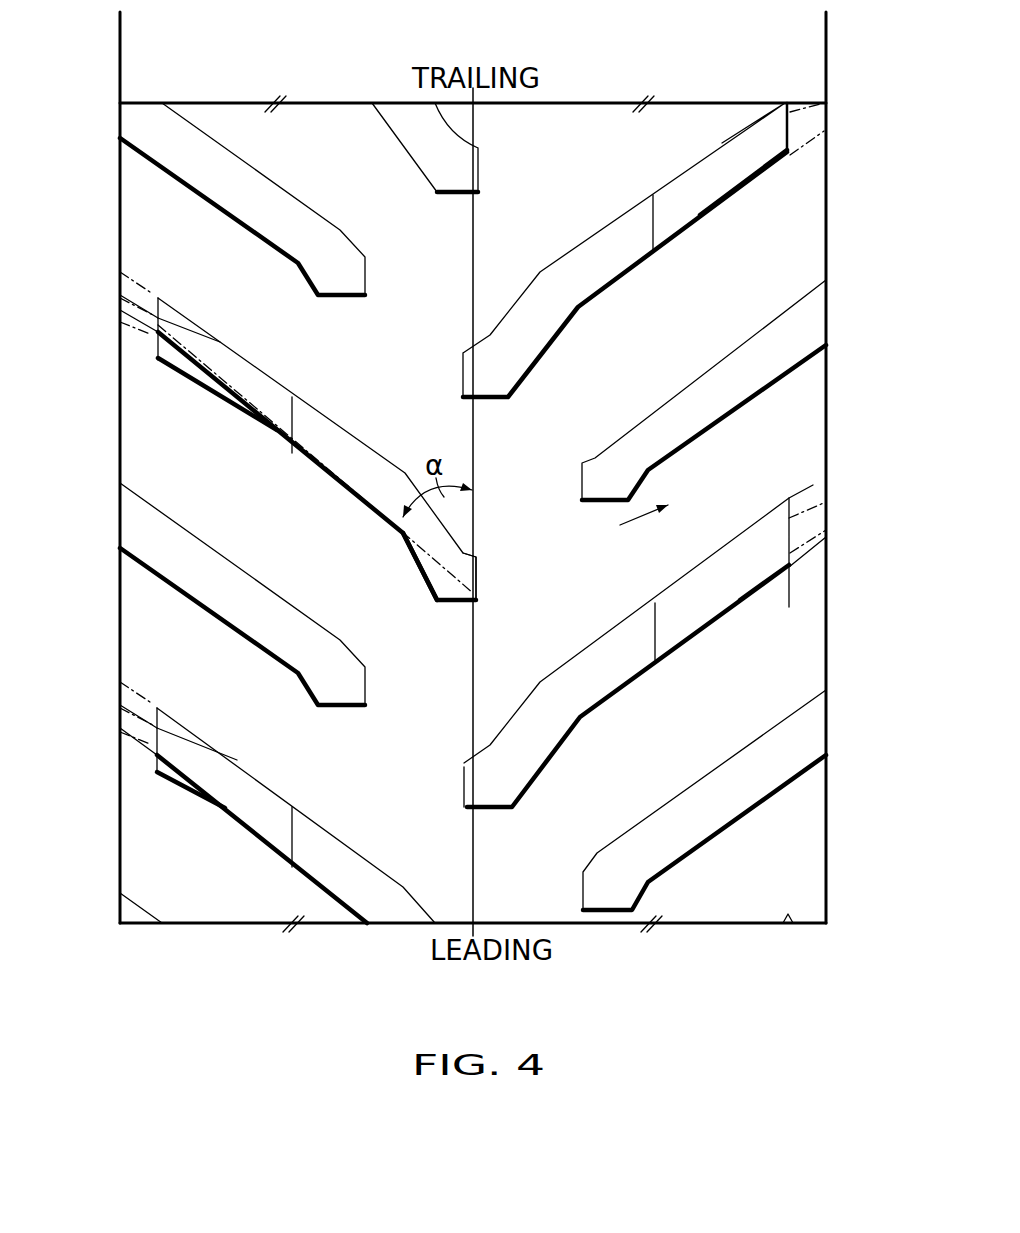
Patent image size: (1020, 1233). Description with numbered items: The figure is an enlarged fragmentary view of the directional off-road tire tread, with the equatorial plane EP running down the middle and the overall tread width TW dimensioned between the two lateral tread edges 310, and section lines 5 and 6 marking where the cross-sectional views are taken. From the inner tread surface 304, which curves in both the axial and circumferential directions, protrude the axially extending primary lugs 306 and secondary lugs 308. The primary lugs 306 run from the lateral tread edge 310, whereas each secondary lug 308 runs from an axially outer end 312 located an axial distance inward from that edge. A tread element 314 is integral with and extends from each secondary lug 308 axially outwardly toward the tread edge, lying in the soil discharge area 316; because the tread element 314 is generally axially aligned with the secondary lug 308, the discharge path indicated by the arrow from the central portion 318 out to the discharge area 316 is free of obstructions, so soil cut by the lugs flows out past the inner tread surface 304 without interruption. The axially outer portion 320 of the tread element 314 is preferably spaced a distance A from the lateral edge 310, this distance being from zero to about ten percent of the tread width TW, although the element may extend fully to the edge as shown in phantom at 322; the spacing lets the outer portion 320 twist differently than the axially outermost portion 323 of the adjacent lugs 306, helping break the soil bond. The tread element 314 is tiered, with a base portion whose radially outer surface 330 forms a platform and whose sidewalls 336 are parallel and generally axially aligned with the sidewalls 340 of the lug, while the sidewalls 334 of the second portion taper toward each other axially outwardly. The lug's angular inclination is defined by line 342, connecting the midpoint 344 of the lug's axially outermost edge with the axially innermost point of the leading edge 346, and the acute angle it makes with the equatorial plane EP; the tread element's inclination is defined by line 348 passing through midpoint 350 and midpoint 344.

The inner tread surface 304 is at (605, 202).
The primary lugs 306 is at (745, 415).
The secondary lugs 308 is at (625, 278).
The tread edge 310 is at (826, 222).
The axially outer end 312 is at (655, 662).
The tread element 314 is at (707, 207).
The soil discharge area 316 is at (817, 385).
The central portion 318 is at (485, 628).
The axially outer portion 320 is at (790, 497).
The phantom extension 322 is at (808, 478).
The axially outermost portion 323 is at (826, 312).
The radially outer surface of base portion 330 is at (772, 573).
The sidewalls of second portion 334 is at (745, 535).
The sidewalls of base portion 336 is at (763, 517).
The sidewalls of lug 340 is at (552, 668).
The line 342 is at (403, 540).
The midpoint 344 is at (288, 428).
The axially innermost point of leading edge 346 is at (480, 596).
The line 348 is at (227, 405).
The midpoint 350 is at (157, 332).
The equatorial plane EP is at (473, 120).
The tread width TW is at (826, 40).
The distance A is at (770, 594).
The section line 5- 5 is at (163, 683).
The section line 6- 6 is at (454, 808).